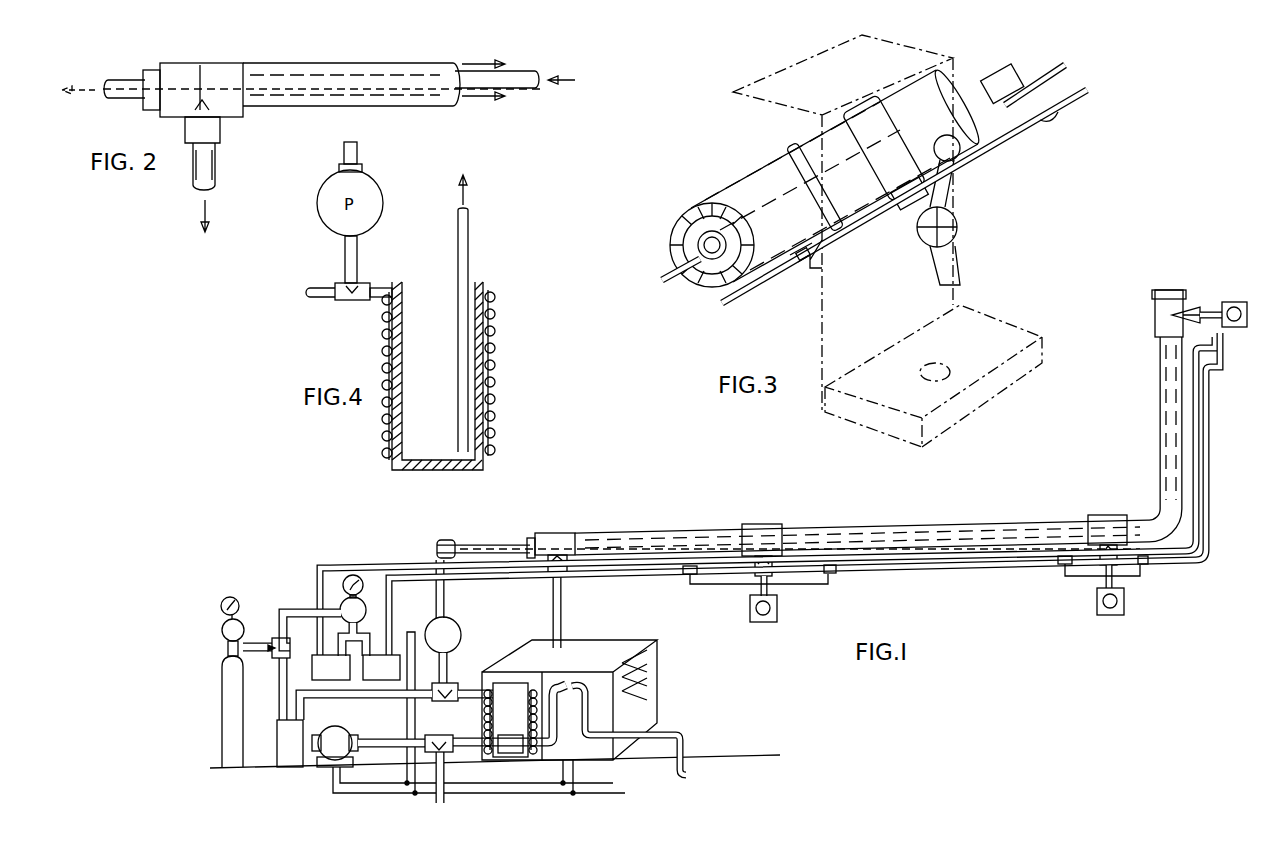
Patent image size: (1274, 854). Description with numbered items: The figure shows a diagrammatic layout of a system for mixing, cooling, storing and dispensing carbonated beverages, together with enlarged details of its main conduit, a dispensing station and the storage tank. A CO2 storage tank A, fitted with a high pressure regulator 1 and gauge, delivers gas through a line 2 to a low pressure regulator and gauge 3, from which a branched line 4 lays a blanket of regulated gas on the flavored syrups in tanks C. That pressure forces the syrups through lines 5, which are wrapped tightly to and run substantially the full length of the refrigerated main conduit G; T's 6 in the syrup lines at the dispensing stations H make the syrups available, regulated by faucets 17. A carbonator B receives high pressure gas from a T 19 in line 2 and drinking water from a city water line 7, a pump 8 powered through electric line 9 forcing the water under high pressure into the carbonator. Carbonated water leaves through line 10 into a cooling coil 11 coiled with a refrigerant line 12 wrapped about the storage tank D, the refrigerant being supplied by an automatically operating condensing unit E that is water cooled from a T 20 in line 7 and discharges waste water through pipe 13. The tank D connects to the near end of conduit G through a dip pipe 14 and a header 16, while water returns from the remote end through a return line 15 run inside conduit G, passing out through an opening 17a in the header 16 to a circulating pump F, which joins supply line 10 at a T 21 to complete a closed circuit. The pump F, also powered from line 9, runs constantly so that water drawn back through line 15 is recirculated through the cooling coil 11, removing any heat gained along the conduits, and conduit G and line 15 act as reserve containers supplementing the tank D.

In FIG. 1, the high pressure regulator 1 is at (242, 620).
In FIG. 1, the conduit or line 2 is at (296, 611).
In FIG. 1, the low pressure regulator and gauge 3 is at (372, 600).
In FIG. 1, the branched conductor or line 4 is at (368, 640).
In FIG. 3, the syrup lines 5 is at (662, 288).
In FIG. 1, the syrup lines 5 is at (330, 565).
In FIG. 3, the T's 6 is at (800, 262).
In FIG. 1, the T's 6 is at (680, 577).
In FIG. 1, the city water line 7 is at (388, 738).
In FIG. 1, the pump 8 is at (345, 730).
In FIG. 1, the electric line 9 is at (416, 632).
In FIG. 4, the line 10 is at (318, 300).
In FIG. 1, the line 10 is at (300, 693).
In FIG. 4, the cooling coil 11 is at (383, 316).
In FIG. 1, the cooling coil 11 is at (490, 685).
In FIG. 4, the refrigerant line or coil 12 is at (496, 314).
In FIG. 1, the refrigerant line or coil 12 is at (540, 728).
In FIG. 1, the waste water pipe or line 13 is at (600, 722).
In FIG. 4, the tap rod or dip pipe 14 is at (470, 222).
In FIG. 1, the tap rod or dip pipe 14 is at (567, 604).
In FIG. 2, the return conduit or line 15 is at (128, 86).
In FIG. 4, the return conduit or line 15 is at (360, 156).
In FIG. 3, the return conduit or line 15 is at (700, 230).
In FIG. 1, the return conduit or line 15 is at (492, 542).
In FIG. 2, the header 16 is at (228, 70).
In FIG. 1, the header 16 is at (553, 532).
In FIG. 3, the faucets 17 is at (975, 228).
In FIG. 1, the faucets 17 is at (770, 622).
In FIG. 2, the opening 17a is at (170, 90).
In FIG. 1, the T 19 is at (292, 648).
In FIG. 1, the T 20 is at (450, 755).
In FIG. 1, the T 21 is at (447, 702).
In FIG. 1, the CO2 storage tank A is at (221, 664).
In FIG. 1, the carbonator B is at (277, 733).
In FIG. 1, the syrup tanks C is at (356, 667).
In FIG. 4, the storage tank D is at (428, 282).
In FIG. 1, the storage tank D is at (516, 683).
In FIG. 1, the refrigerant condensing unit E is at (628, 640).
In FIG. 1, the circulating pump F is at (456, 622).
In FIG. 2, the refrigerated or main conduit G is at (320, 63).
In FIG. 3, the refrigerated or main conduit G is at (670, 247).
In FIG. 1, the refrigerated or main conduit G is at (865, 530).
In FIG. 3, the dispensing stations H is at (800, 150).
In FIG. 1, the dispensing stations H is at (758, 524).